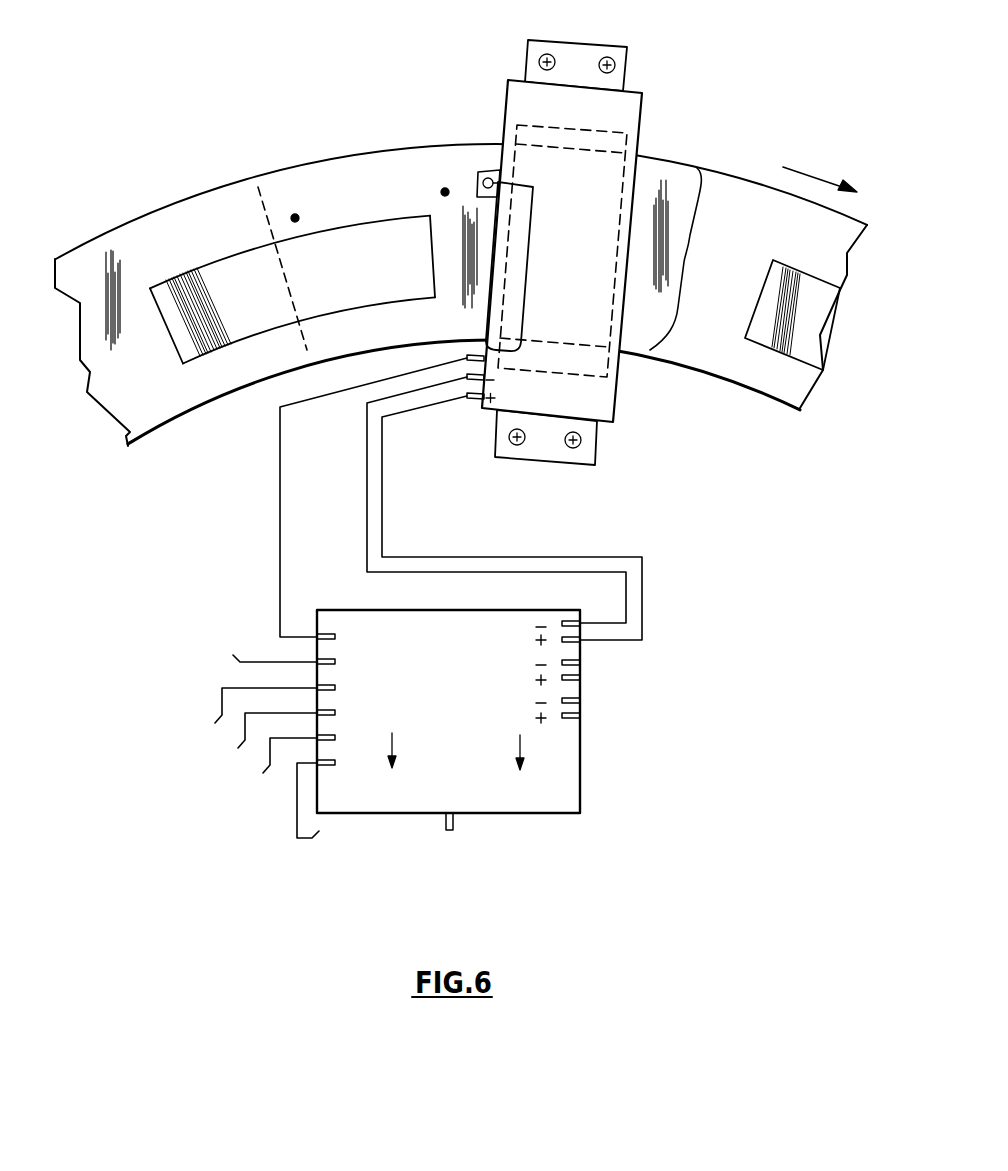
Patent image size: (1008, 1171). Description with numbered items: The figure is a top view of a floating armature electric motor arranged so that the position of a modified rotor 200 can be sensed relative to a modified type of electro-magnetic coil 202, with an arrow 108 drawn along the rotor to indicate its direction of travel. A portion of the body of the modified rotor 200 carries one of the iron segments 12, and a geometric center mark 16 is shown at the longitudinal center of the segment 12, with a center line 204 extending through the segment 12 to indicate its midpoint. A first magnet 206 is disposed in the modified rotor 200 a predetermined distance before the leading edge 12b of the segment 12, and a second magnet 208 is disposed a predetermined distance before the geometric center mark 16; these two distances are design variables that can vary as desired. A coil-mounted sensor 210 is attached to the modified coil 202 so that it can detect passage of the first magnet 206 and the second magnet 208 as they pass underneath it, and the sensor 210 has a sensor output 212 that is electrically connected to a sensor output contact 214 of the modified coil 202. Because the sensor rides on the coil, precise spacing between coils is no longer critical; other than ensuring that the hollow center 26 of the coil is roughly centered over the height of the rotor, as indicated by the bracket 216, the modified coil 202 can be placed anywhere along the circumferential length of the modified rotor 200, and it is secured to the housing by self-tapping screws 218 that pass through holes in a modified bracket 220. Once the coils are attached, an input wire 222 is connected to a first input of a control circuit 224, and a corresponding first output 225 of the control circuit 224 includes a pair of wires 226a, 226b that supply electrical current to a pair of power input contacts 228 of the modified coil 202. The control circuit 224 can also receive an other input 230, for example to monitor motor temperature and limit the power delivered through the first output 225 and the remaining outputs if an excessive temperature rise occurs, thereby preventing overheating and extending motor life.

The modified rotor 200 is at (168, 202).
The center line 204 is at (262, 202).
The iron segment 12 is at (350, 225).
The leading edge 12b is at (427, 248).
The geometric center mark 16 is at (283, 275).
The second magnet 208 is at (295, 222).
The first magnet 206 is at (443, 190).
The coil-mounted sensor 210 is at (487, 170).
The modified electro-magnetic coil 202 is at (643, 102).
The hollow center 26 is at (628, 133).
The sensor output 212 is at (528, 273).
The sensor output contact 214 is at (482, 342).
The bracket 216 is at (685, 265).
The direction of travel arrow 108 is at (816, 162).
The modified bracket 220 is at (532, 50).
The self-tapping screws 218 is at (600, 58).
The power input contacts 228 is at (478, 392).
The input wire 222 is at (280, 532).
The wire 226a is at (643, 622).
The wire 226b is at (626, 598).
The first output 225 is at (583, 647).
The control circuit 224 is at (482, 843).
The other input 230 is at (450, 830).